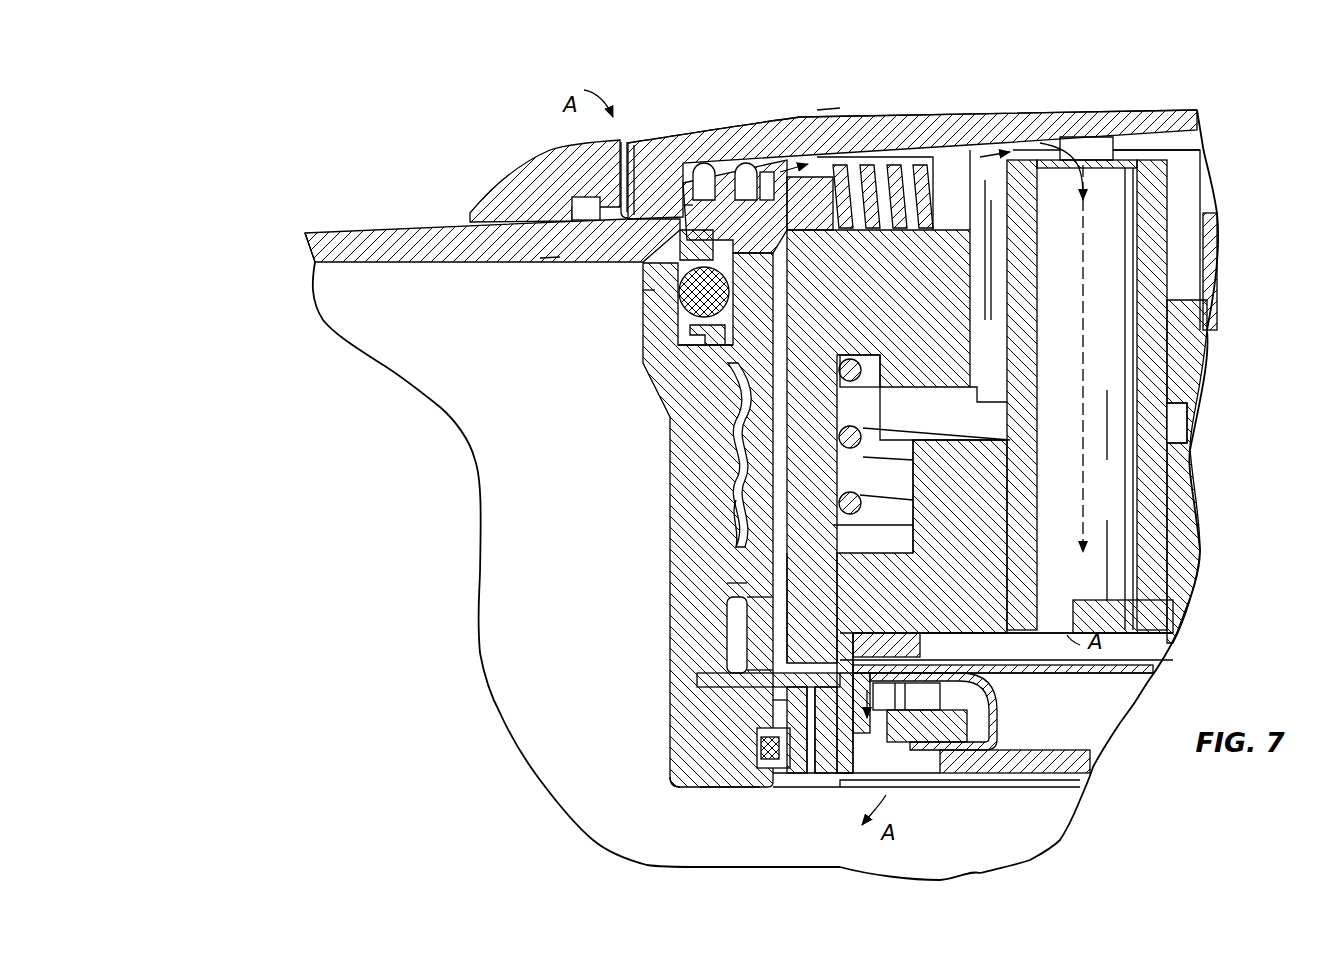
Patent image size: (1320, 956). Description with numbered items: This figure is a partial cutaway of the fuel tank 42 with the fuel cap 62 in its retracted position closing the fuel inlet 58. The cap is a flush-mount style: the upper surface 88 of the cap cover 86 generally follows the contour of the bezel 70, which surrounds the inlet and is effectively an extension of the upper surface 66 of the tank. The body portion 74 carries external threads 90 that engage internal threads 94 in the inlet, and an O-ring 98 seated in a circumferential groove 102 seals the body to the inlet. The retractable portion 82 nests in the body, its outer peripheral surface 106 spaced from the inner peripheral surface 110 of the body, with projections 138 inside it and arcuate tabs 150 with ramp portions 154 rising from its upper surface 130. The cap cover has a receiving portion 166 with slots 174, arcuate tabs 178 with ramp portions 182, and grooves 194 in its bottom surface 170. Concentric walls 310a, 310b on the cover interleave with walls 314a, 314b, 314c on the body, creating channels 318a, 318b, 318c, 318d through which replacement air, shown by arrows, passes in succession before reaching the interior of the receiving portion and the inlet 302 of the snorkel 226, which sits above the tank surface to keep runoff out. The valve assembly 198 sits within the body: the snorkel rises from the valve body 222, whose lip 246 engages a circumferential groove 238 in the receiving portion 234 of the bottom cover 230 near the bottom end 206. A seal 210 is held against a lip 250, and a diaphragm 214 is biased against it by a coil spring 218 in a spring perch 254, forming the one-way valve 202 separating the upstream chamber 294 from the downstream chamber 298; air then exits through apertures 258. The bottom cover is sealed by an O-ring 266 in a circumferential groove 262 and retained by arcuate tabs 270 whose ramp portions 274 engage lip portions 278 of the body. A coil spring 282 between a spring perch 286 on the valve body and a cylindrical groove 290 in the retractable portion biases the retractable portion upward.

The fuel tank 42 is at (413, 243).
The fuel inlet 58 is at (670, 471).
The fuel cap 62 is at (1167, 80).
The upper surface 66 is at (327, 230).
The bezel 70 is at (532, 170).
The body portion 74 is at (727, 597).
The retractable portion 82 is at (720, 553).
The cap cover 86 is at (1073, 120).
The upper surface 88 is at (828, 113).
The external threads 90 is at (740, 515).
The internal threads 94 is at (733, 418).
The O-ring 98 is at (680, 330).
The circumferential groove 102 is at (665, 360).
The outer peripheral surface 106 is at (747, 620).
The inner peripheral surface 110 is at (760, 670).
The upper surface 130 is at (920, 228).
The projections 138 is at (940, 328).
The arcuate tabs 150 is at (940, 173).
The ramp portion 154 is at (860, 170).
The receiving portion 166 is at (960, 410).
The bottom surface 170 is at (1093, 140).
The slots 174 is at (970, 353).
The arcuate tabs 178 is at (808, 163).
The ramp portion 182 is at (677, 268).
The grooves 194 is at (950, 157).
The valve assembly 198 is at (1173, 427).
The one-way valve 202 is at (1070, 677).
The bottom end 206 is at (700, 787).
The seal 210 is at (903, 645).
The diaphragm 214 is at (983, 707).
The coil spring 218 is at (987, 735).
The valve body 222 is at (1167, 508).
The snorkel 226 is at (1147, 305).
The bottom cover 230 is at (813, 765).
The receiving portion 234 is at (800, 680).
The circumferential groove 238 is at (855, 610).
The lip 246 is at (727, 583).
The lip 250 is at (890, 670).
The spring perch 254 is at (1090, 760).
The apertures 258 is at (880, 733).
The circumferential groove 262 is at (773, 758).
The O-ring 266 is at (697, 753).
The arcuate tabs 270 is at (807, 710).
The ramp portions 274 is at (793, 707).
The lip portions 278 is at (800, 740).
The coil spring 282 is at (877, 445).
The spring perch 286 is at (845, 595).
The cylindrical groove 290 is at (873, 388).
The upstream chamber 294 is at (1120, 585).
The downstream chamber 298 is at (923, 697).
The inlet 302 is at (1180, 131).
The concentric wall 310a is at (700, 190).
The concentric wall 310b is at (745, 172).
The concentric wall 314a is at (625, 140).
The intermediate wall 314b is at (643, 260).
The concentric wall 314c is at (833, 177).
The channel 318a is at (688, 205).
The channel 318b is at (548, 258).
The channel 318c is at (738, 172).
The channel 318d is at (643, 290).